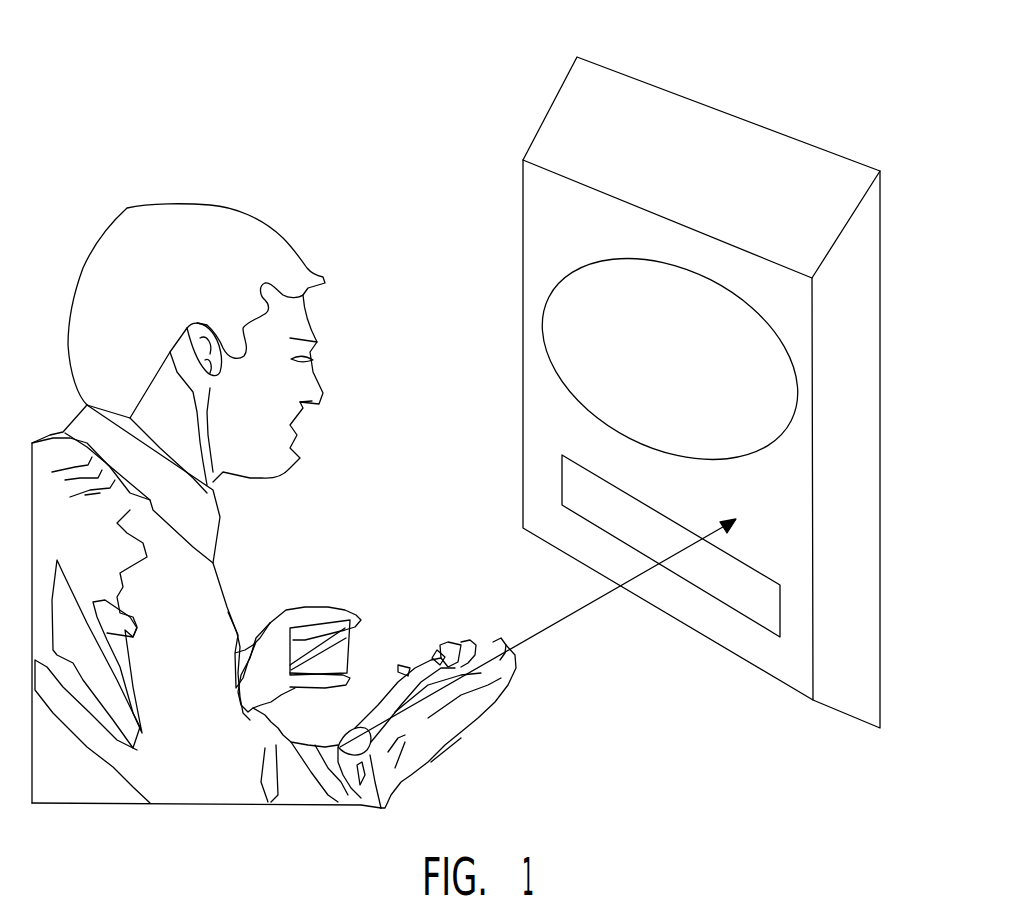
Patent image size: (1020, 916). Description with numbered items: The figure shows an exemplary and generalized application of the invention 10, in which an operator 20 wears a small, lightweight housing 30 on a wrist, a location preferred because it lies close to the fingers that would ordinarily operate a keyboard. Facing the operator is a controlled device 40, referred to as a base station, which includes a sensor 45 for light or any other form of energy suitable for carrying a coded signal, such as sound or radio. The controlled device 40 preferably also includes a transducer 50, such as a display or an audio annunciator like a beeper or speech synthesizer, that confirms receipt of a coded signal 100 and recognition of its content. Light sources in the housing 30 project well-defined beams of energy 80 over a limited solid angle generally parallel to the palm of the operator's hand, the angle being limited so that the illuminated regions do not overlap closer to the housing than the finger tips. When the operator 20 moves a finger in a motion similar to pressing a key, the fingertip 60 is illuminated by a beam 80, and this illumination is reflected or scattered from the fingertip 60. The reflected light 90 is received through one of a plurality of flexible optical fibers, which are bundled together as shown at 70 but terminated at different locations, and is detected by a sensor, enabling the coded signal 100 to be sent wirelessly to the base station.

The invention 10 is at (664, 368).
The operator 20 is at (222, 797).
The housing 30 is at (363, 745).
The controlled device 40 is at (741, 652).
The sensor 45 is at (671, 546).
The transducer 50 is at (565, 287).
The fingertip 60 is at (437, 650).
The bundled optical fibers 70 is at (403, 660).
The beam of energy 80 is at (403, 670).
The reflected light 90 is at (417, 668).
The coded signal 100 is at (590, 605).